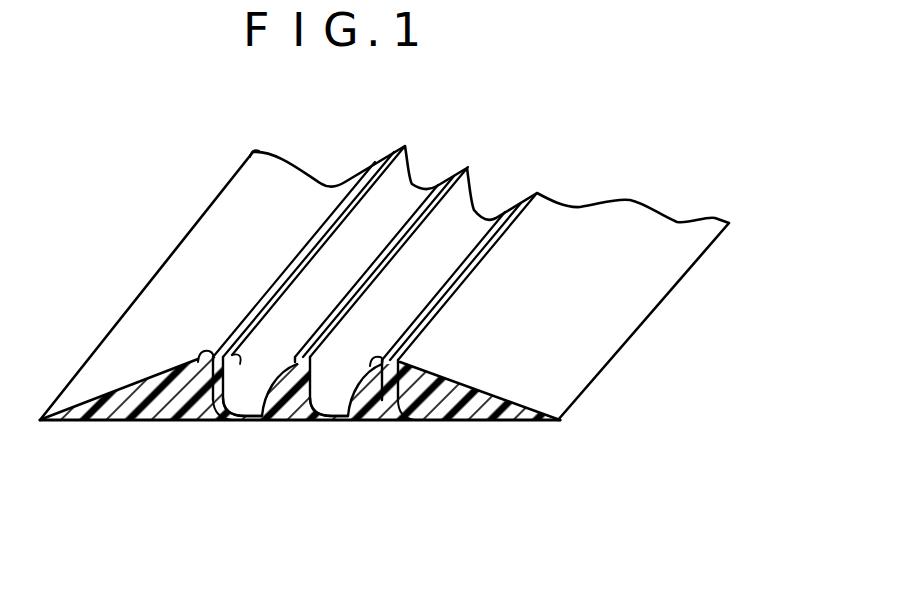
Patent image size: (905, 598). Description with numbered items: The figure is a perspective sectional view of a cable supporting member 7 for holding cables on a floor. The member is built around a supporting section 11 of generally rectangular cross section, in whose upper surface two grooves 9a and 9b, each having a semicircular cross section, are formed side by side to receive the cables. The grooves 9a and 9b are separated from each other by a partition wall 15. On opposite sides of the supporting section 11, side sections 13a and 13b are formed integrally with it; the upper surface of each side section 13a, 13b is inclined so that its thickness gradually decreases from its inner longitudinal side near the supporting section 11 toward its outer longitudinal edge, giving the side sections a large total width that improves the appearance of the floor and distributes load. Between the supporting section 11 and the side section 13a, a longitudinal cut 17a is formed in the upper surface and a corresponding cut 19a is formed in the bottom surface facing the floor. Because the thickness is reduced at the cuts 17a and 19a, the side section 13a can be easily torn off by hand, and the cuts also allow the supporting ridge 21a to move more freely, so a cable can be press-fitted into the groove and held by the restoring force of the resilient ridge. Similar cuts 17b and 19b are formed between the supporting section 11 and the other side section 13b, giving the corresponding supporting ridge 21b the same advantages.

The cable supporting member 7 is at (693, 152).
The groove 9a is at (408, 182).
The groove 9b is at (472, 210).
The supporting section 11 is at (303, 437).
The side section 13a is at (103, 418).
The side section 13b is at (482, 420).
The partition wall 15 is at (262, 418).
The cut 17a is at (238, 310).
The cut 17b is at (420, 360).
The cut 19a is at (215, 432).
The cut 19b is at (392, 432).
The supporting ridge 21a is at (197, 363).
The supporting ridge 21b is at (377, 363).